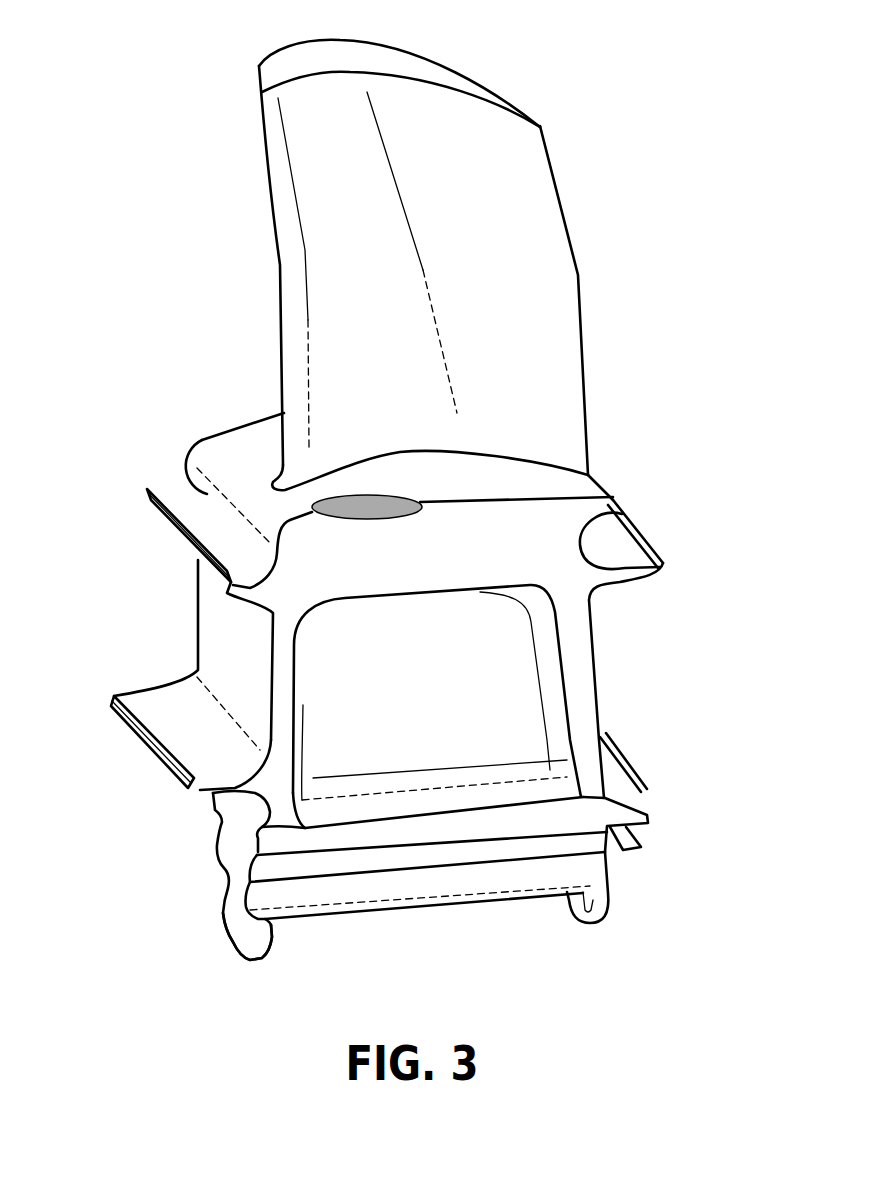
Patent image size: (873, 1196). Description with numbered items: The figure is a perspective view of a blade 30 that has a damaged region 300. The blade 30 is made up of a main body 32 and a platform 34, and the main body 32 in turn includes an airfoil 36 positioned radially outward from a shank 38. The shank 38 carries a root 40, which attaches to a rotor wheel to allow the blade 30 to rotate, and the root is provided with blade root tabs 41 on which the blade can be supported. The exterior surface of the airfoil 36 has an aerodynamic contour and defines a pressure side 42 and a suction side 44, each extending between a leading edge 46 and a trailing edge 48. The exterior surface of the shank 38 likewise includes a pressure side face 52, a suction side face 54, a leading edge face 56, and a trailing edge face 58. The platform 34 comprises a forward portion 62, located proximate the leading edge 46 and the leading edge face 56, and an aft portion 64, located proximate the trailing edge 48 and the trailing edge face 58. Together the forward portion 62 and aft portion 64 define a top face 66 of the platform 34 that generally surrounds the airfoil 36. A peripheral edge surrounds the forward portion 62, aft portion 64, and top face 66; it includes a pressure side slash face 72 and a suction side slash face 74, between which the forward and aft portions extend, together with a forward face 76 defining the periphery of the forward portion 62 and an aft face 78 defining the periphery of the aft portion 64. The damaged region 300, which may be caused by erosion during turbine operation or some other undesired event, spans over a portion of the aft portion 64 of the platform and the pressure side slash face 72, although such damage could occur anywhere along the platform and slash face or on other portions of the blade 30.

The blade 30 is at (381, 498).
The main body 32 is at (177, 569).
The platform 34 is at (233, 444).
The airfoil 36 is at (348, 240).
The shank 38 is at (228, 641).
The root 40 is at (236, 932).
The blade root tabs 41 is at (258, 940).
The pressure side 42 is at (427, 95).
The suction side 44 is at (421, 62).
The leading edge 46 is at (258, 90).
The trailing edge 48 is at (543, 127).
The pressure side face 52 is at (513, 722).
The suction side face 54 is at (198, 595).
The leading edge face 56 is at (217, 665).
The trailing edge face 58 is at (597, 677).
The forward portion 62 is at (268, 441).
The aft portion 64 is at (534, 483).
The top face 66 is at (500, 475).
The pressure side slash face 72 is at (413, 557).
The suction side slash face 74 is at (228, 428).
The forward face 76 is at (210, 468).
The aft face 78 is at (613, 498).
The damaged region 300 is at (362, 490).